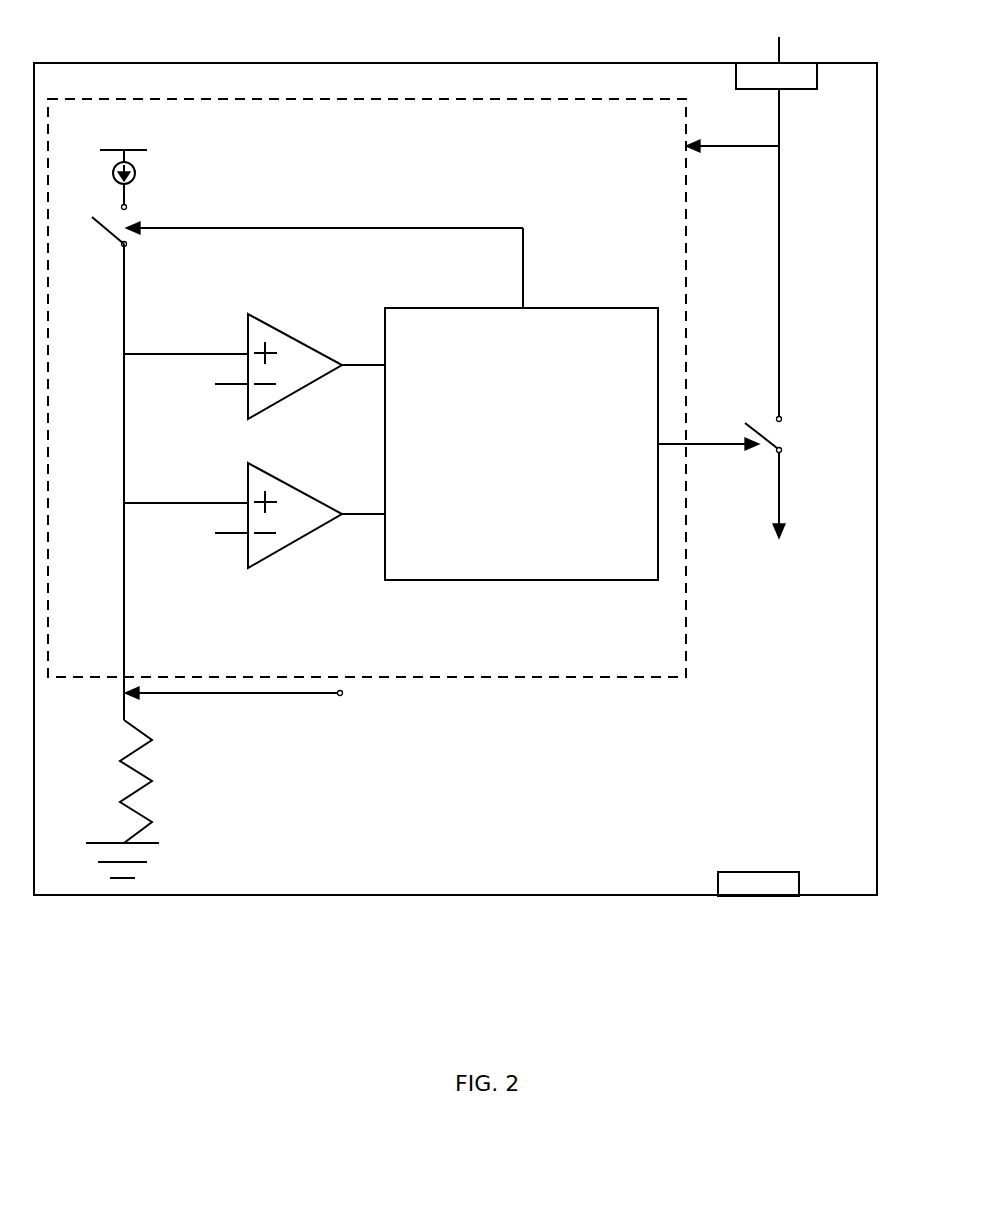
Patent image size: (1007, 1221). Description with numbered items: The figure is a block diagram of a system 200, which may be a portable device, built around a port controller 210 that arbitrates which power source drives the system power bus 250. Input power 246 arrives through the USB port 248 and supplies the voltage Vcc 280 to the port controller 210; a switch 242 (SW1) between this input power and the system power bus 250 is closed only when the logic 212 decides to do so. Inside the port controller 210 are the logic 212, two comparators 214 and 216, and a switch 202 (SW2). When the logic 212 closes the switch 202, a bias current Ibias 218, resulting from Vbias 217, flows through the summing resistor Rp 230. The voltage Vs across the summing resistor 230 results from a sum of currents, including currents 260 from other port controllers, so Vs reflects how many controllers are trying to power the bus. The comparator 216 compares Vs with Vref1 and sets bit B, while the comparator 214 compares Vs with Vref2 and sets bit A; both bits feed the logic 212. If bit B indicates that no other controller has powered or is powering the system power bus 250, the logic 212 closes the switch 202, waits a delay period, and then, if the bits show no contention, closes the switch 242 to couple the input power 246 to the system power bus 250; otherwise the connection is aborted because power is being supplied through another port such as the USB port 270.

The system 200 is at (107, 93).
The port controller 210 is at (664, 129).
The logic 212 is at (428, 333).
The switch (SW2) 202 is at (142, 458).
The comparator 214 is at (239, 355).
The comparator 216 is at (254, 504).
The bias voltage Vbias 217 is at (159, 130).
The bias current Ibias 218 is at (176, 168).
The summing resistor Rp 230 is at (166, 799).
The switch 242 is at (805, 434).
The input power source 246 is at (722, 39).
The USB port 248 is at (799, 97).
The system power bus 250 is at (811, 530).
The currents from other port controllers 260 is at (330, 719).
The USB port 270 is at (699, 864).
The voltage Vcc 280 is at (702, 245).